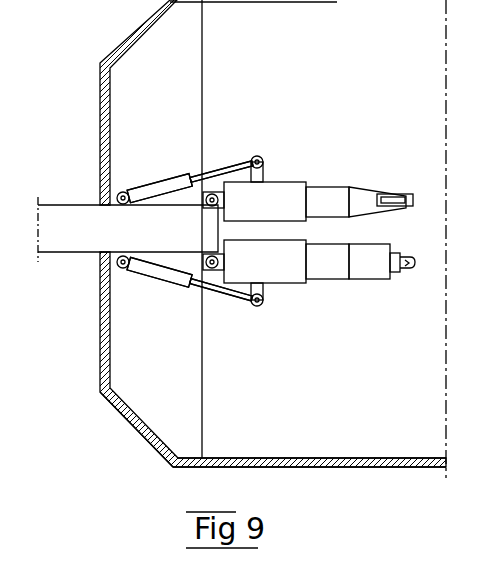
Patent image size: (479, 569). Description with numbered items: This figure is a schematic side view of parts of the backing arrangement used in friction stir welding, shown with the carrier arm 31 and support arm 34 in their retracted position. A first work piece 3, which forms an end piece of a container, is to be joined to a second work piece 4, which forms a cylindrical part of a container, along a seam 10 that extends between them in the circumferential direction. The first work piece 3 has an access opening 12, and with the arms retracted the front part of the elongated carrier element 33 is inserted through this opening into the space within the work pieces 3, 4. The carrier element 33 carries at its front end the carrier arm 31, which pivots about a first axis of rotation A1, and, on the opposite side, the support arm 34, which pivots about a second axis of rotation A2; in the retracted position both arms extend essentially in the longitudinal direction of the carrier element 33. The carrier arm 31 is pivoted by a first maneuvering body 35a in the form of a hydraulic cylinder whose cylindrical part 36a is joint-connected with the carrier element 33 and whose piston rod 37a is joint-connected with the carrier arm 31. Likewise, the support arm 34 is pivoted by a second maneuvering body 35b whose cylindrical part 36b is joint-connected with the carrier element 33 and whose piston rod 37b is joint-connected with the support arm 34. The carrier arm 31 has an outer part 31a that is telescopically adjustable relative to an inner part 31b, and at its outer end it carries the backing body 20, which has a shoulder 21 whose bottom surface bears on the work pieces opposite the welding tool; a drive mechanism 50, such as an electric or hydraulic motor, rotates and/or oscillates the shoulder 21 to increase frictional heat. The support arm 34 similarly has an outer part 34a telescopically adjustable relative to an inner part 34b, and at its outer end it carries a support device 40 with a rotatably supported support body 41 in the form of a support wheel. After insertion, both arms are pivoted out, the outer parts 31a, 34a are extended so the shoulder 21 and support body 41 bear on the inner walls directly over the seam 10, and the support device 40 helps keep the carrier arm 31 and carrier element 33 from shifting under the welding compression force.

The first work piece 3 is at (138, 428).
The second work piece 4 is at (248, 468).
The seam 10 is at (203, 422).
The access opening 12 is at (102, 297).
The backing body 20 is at (410, 284).
The shoulder 21 is at (406, 262).
The carrier arm 31 is at (327, 293).
The outer part of carrier arm 31a is at (336, 271).
The inner part of carrier arm 31b is at (278, 277).
The carrier element 33 is at (67, 218).
The support arm 34 is at (323, 163).
The outer part of support arm 34a is at (333, 192).
The inner part of support arm 34b is at (272, 187).
The first maneuvering body 35a is at (155, 294).
The second maneuvering body 35b is at (160, 158).
The cylindrical part 36a is at (145, 276).
The cylindrical part 36b is at (147, 188).
The piston rod 37a is at (229, 293).
The piston rod 37b is at (215, 172).
The support device 40 is at (387, 180).
The support body 41 is at (407, 194).
The drive mechanism 50 is at (375, 272).
The first axis of rotation A1 is at (208, 297).
The second axis of rotation A2 is at (208, 205).